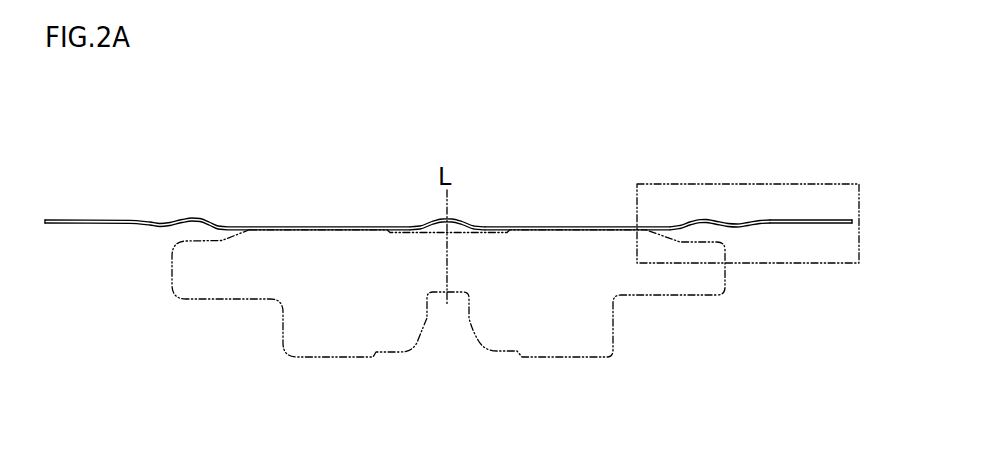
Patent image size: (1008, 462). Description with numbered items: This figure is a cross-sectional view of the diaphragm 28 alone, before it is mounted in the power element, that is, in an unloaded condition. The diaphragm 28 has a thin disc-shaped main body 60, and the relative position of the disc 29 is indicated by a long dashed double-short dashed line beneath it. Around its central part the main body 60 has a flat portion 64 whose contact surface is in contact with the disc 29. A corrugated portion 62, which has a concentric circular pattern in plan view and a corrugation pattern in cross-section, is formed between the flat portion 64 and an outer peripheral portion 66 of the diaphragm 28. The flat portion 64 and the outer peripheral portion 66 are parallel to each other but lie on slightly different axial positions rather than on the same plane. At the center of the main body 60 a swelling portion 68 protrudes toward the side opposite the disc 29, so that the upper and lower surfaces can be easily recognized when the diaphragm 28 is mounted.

The diaphragm 28 is at (797, 153).
The disc 29 is at (172, 287).
The main body 60 is at (114, 213).
The corrugated portion 62 is at (737, 230).
The flat portion 64 is at (588, 231).
The outer peripheral portion 66 is at (790, 224).
The swelling portion 68 is at (459, 221).